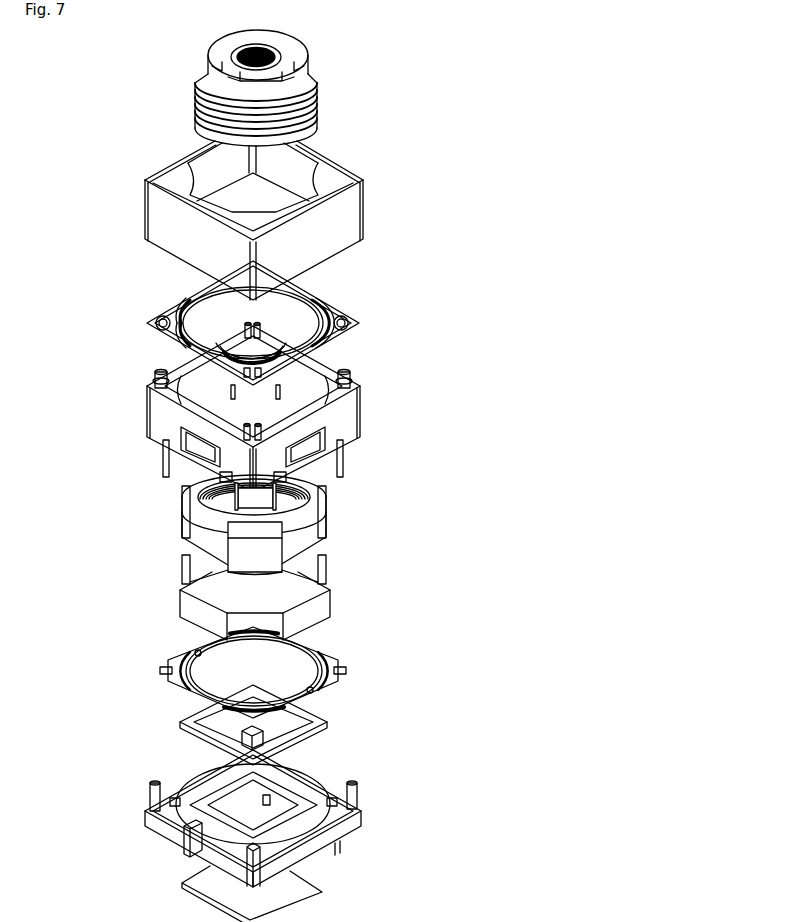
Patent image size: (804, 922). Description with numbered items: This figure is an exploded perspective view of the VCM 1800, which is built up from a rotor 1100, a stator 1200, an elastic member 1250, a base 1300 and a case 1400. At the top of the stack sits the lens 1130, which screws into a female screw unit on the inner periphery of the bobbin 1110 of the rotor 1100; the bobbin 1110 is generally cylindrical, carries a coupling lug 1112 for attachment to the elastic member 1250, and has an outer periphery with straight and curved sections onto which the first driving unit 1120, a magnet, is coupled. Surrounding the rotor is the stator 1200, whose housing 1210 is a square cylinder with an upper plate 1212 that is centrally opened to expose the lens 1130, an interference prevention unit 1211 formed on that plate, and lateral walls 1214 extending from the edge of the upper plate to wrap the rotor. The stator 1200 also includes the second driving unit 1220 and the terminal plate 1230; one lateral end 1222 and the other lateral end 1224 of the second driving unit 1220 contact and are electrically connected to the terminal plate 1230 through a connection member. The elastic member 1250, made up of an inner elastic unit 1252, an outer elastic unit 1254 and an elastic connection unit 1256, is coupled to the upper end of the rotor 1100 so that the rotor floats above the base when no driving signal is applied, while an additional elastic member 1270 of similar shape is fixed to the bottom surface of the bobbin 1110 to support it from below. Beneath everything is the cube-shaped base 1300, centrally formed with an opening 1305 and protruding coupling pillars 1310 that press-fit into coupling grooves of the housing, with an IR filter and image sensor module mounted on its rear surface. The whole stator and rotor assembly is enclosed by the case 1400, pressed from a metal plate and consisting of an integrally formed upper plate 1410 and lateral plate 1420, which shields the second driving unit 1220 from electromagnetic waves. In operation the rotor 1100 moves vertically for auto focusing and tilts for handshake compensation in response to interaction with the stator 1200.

The VCM 1800 is at (292, 101).
The lens 1130 is at (219, 48).
The case 1400 is at (280, 220).
The upper plate 1410 is at (172, 180).
The lateral plate 1420 is at (173, 227).
The elastic member 1250 is at (283, 323).
The inner elastic unit 1252 is at (336, 312).
The outer elastic unit 1254 is at (173, 345).
The elastic connection unit 1256 is at (188, 311).
The stator 1200 is at (261, 418).
The housing 1210 is at (246, 409).
The interference prevention unit 1211 is at (184, 397).
The upper plate 1212 is at (156, 383).
The lateral walls 1214 is at (350, 413).
The second driving unit 1220 is at (267, 468).
The one lateral end 1222 is at (163, 452).
The other lateral end 1224 is at (183, 489).
The terminal plate 1230 is at (347, 467).
The rotor 1100 is at (252, 557).
The bobbin 1110 is at (199, 530).
The coupling lug 1112 is at (185, 510).
The first driving unit 1120 is at (322, 602).
The additional elastic member 1270 is at (150, 669).
The base 1300 is at (298, 786).
The opening 1305 is at (222, 800).
The coupling pillar 1310 is at (352, 781).